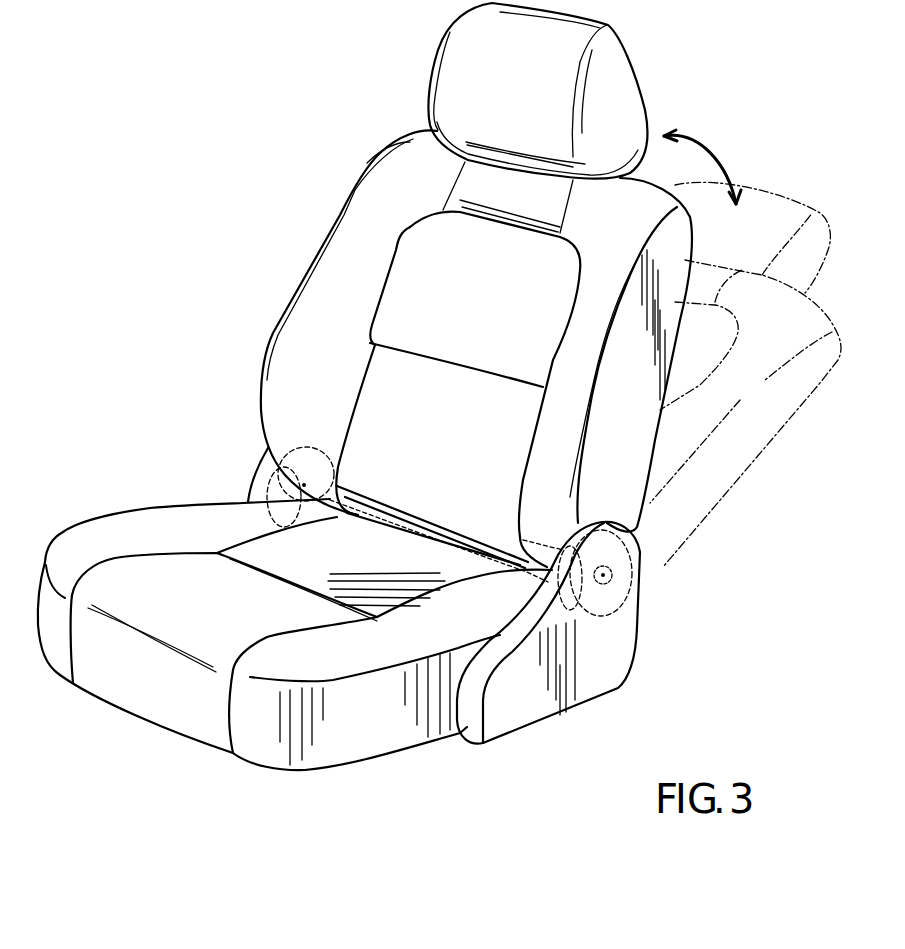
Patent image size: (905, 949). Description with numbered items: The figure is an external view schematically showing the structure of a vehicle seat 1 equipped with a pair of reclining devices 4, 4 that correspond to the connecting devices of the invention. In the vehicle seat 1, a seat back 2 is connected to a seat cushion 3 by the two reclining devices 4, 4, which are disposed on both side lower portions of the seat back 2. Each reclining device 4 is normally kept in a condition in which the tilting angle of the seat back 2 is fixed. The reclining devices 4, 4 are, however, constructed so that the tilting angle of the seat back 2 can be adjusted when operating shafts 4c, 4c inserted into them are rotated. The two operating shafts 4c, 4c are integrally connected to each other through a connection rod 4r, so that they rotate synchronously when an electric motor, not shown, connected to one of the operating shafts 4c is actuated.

The vehicle seat 1 is at (389, 386).
The seat back 2 is at (350, 272).
The seat cushion 3 is at (125, 537).
The reclining device 4 is at (305, 460).
The operating shaft 4c is at (306, 484).
The connection rod 4r is at (423, 523).